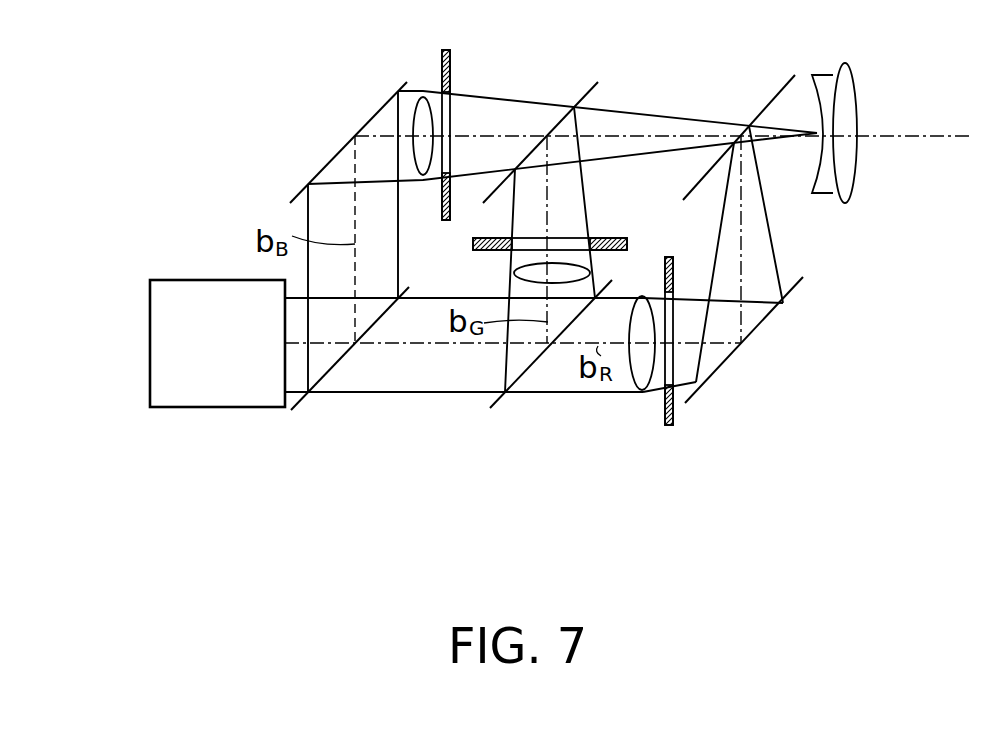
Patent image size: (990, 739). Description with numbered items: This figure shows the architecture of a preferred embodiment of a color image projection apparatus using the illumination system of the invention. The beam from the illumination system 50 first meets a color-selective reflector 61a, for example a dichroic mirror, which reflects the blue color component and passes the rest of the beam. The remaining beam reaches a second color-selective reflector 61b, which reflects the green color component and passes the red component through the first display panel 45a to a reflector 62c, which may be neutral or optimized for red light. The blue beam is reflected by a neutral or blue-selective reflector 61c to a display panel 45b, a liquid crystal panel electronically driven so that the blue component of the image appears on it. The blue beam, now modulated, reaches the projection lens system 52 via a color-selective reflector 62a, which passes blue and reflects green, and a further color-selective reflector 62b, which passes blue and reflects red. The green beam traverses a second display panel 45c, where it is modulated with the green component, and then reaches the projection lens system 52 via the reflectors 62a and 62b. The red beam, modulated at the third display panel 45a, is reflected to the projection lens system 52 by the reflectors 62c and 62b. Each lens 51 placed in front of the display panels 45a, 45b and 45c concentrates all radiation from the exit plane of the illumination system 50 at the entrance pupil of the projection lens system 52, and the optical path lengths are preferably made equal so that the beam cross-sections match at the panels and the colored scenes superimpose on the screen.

The illumination system 50 is at (227, 280).
The lens 51 is at (424, 176).
The projection lens system 52 is at (857, 184).
The first display panel 45a is at (667, 418).
The display panel 45b is at (452, 75).
The second display panel 45c is at (604, 238).
The color-selective reflector 61a is at (300, 403).
The second color-selective reflector 61b is at (493, 405).
The blue-selective reflector 61c is at (329, 164).
The color-selective reflector 62a is at (592, 88).
The further color-selective reflector 62b is at (781, 90).
The reflector 62c is at (795, 290).